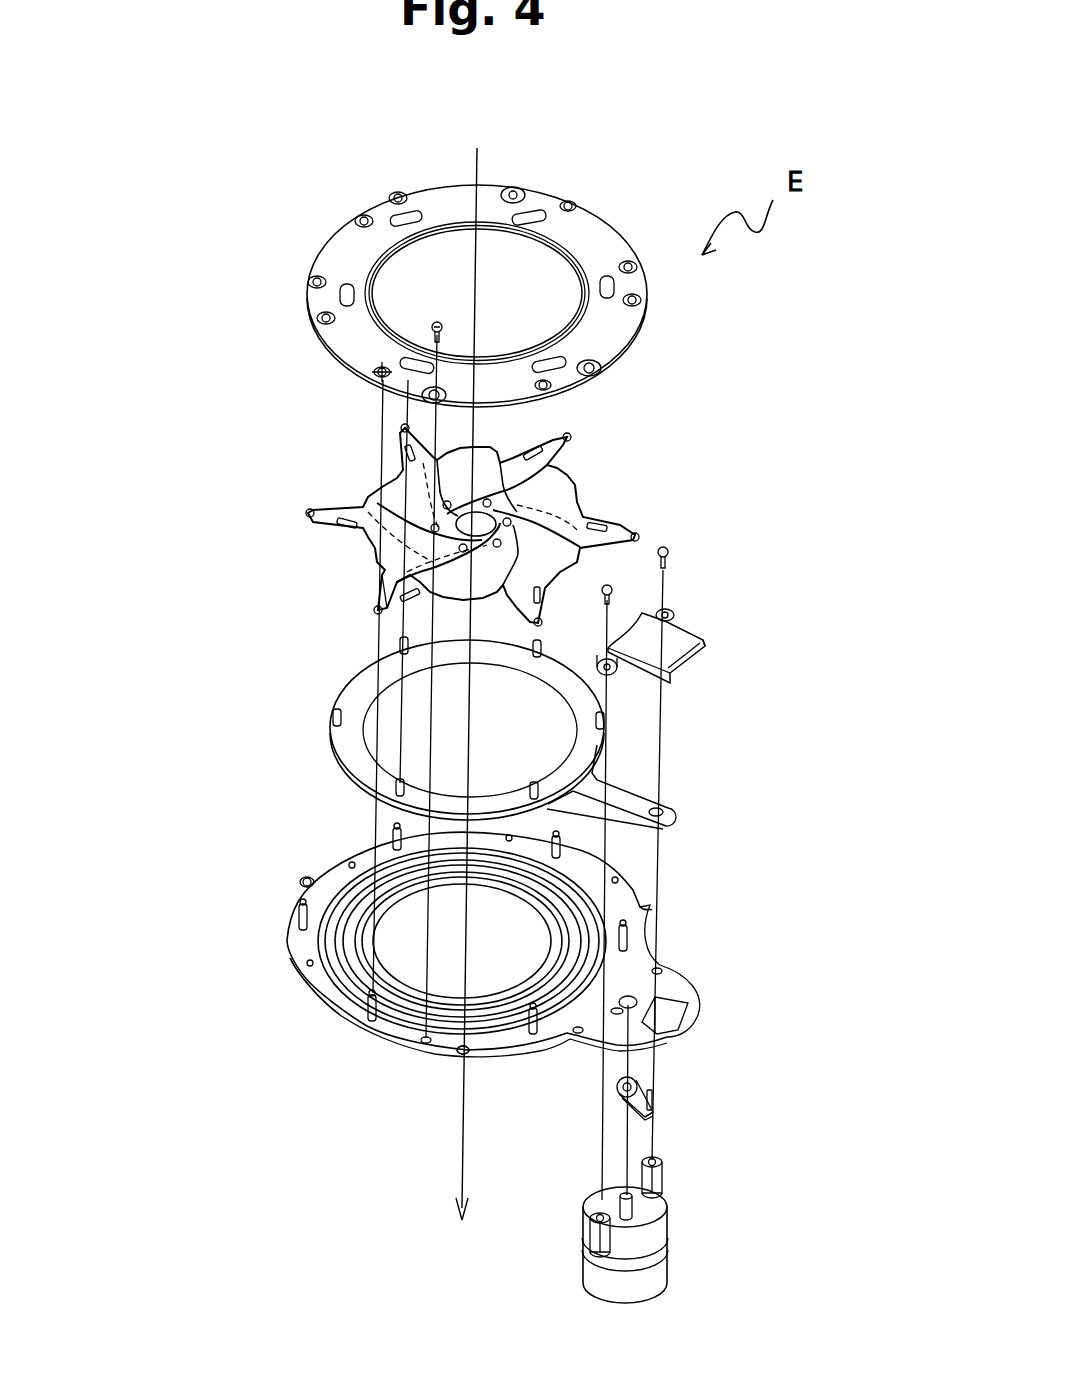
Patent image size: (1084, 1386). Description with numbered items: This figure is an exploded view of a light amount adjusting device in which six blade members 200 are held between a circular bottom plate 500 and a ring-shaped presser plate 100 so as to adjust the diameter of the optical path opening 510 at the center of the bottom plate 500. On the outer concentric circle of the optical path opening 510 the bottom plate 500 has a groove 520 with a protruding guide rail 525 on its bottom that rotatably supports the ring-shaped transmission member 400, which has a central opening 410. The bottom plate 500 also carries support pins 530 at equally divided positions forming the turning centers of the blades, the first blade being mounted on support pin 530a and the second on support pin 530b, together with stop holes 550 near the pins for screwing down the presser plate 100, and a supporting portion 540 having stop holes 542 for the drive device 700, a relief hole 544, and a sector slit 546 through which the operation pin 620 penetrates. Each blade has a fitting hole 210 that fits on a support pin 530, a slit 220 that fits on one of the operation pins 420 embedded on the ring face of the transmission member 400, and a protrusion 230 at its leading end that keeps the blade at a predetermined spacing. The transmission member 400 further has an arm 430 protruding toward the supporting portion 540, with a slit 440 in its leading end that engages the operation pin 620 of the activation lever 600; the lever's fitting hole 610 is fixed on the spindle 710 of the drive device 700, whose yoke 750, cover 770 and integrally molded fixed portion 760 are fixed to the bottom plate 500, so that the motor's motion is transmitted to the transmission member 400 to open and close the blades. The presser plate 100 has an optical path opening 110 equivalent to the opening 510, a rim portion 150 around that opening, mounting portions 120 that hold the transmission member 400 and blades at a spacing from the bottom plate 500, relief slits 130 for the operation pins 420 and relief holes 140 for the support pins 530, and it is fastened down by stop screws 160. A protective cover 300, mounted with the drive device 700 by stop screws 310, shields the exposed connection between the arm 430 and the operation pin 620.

The presser plate 100 is at (315, 252).
The optical path opening 110 is at (457, 252).
The mounting portions 120 is at (513, 188).
The relief slits 130 is at (537, 222).
The relief holes 140 is at (572, 204).
The rim 150 is at (567, 248).
The stop screws 160 is at (435, 322).
The blade members 200 is at (330, 500).
The fitting hole 210 is at (373, 611).
The slit 220 is at (380, 588).
The protrusion 230 is at (522, 460).
The protective cover 300 is at (703, 632).
The stop screws 310 is at (667, 548).
The transmission member 400 is at (340, 700).
The opening 410 is at (537, 708).
The operation pins 420 is at (333, 718).
The arm 430 is at (627, 805).
The slit 440 is at (667, 810).
The bottom plate 500 is at (303, 880).
The optical path opening 510 is at (347, 862).
The groove 520 is at (430, 937).
The guide rail 525 is at (305, 962).
The support pins 530 is at (298, 912).
The support pin 530a is at (510, 1050).
The support pin 530b is at (627, 968).
The supporting portion 540 is at (698, 987).
The stop holes 542 is at (633, 998).
The relief hole 544 is at (658, 970).
The sector slit 546 is at (667, 1010).
The stop holes 550 is at (305, 988).
The activation lever 600 is at (667, 1098).
The fitting hole 610 is at (615, 1085).
The operation pin 620 is at (657, 1115).
The drive device 700 is at (663, 1226).
The spindle 710 is at (618, 1203).
The yoke 750 is at (603, 1277).
The fixed portion 760 is at (590, 1242).
The cover 770 is at (664, 1182).